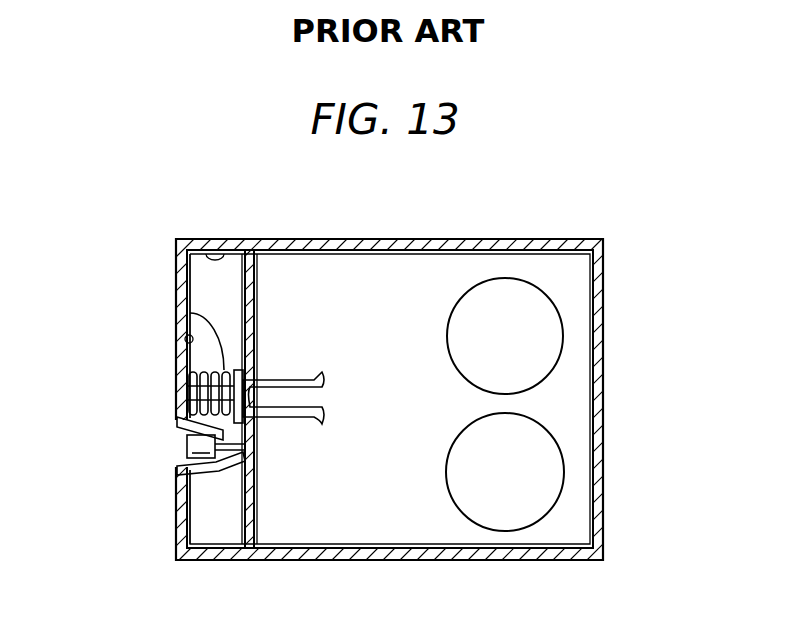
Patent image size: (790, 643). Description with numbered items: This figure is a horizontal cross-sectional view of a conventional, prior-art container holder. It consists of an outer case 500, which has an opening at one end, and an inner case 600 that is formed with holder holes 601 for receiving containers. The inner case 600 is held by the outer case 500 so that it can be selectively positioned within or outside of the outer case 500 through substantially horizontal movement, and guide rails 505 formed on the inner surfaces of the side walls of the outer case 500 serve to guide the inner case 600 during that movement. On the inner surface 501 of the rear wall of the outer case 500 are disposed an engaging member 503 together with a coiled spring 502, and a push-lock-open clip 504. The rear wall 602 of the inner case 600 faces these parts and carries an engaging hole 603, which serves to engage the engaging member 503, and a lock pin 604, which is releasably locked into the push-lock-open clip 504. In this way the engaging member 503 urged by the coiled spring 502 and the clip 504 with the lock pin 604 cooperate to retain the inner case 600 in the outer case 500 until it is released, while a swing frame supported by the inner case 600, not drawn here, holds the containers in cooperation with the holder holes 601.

The outer case 500 is at (176, 270).
The inner surface 501 is at (184, 342).
The coiled spring 502 is at (187, 316).
The engaging member 503 is at (280, 378).
The push-lock-open clip 504 is at (186, 437).
The guide rails 505 is at (224, 250).
The inner case 600 is at (603, 276).
The holder holes 601 is at (533, 346).
The rear wall 602 is at (256, 493).
The engaging hole 603 is at (258, 420).
The lock pin 604 is at (238, 460).